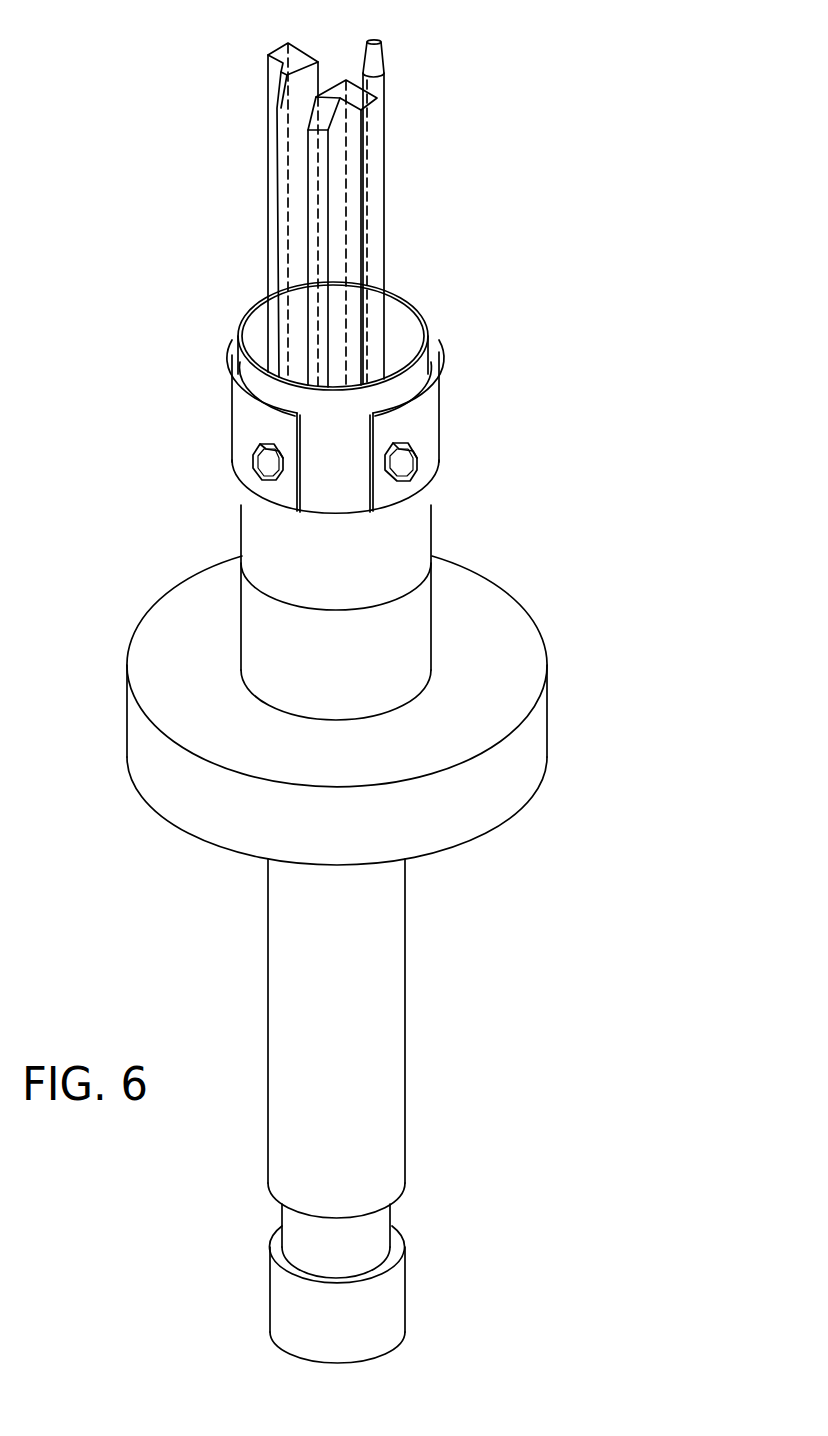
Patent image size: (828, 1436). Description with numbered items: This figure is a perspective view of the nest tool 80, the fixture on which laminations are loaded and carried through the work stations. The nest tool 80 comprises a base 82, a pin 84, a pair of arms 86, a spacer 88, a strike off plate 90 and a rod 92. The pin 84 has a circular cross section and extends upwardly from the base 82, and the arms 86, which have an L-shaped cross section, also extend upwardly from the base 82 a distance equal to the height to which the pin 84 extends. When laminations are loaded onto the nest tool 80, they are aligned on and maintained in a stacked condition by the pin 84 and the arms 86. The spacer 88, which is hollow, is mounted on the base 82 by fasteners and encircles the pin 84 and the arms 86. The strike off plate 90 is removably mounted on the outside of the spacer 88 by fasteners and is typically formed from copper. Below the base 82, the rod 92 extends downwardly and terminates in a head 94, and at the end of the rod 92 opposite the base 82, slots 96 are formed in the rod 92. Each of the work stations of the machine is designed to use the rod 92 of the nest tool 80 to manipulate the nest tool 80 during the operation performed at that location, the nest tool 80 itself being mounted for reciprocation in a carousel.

The nest tool 80 is at (582, 552).
The base 82 is at (240, 602).
The pin 84 is at (384, 60).
The arms 86 is at (285, 47).
The spacer 88 is at (420, 507).
The strike off plate 90 is at (427, 402).
The rod 92 is at (380, 972).
The head 94 is at (392, 1305).
The slots 96 is at (298, 1228).